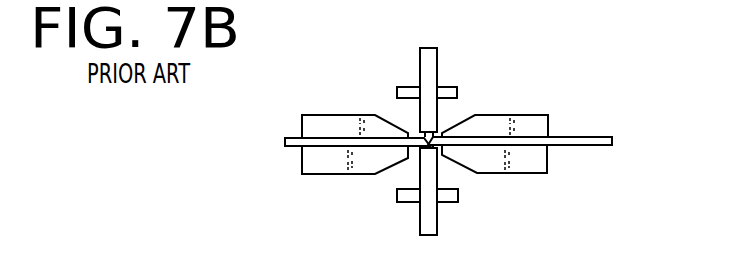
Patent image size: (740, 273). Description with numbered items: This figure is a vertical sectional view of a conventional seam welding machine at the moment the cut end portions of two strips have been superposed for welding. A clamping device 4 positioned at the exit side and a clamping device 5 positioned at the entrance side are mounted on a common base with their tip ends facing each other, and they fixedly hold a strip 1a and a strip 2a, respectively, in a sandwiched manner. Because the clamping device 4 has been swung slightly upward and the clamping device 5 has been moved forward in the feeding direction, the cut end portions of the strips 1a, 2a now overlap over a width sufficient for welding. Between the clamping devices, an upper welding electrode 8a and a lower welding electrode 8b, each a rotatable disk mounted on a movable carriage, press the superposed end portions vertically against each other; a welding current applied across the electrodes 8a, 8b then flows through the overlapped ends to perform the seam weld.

The strip 1a is at (295, 147).
The strip 2a is at (578, 147).
The clamping device 4 is at (336, 127).
The clamping device 5 is at (533, 128).
The upper welding electrode 8a is at (437, 61).
The lower welding electrode 8b is at (437, 220).